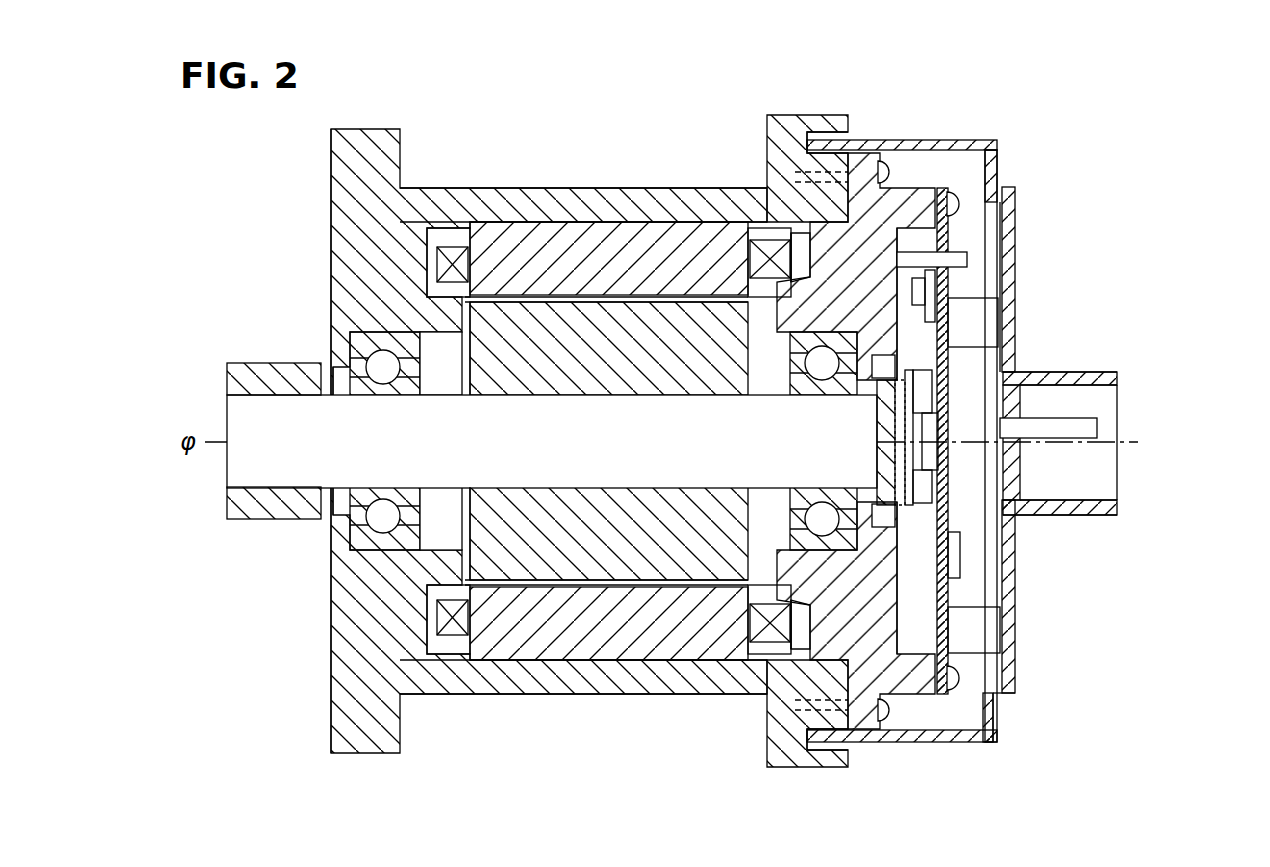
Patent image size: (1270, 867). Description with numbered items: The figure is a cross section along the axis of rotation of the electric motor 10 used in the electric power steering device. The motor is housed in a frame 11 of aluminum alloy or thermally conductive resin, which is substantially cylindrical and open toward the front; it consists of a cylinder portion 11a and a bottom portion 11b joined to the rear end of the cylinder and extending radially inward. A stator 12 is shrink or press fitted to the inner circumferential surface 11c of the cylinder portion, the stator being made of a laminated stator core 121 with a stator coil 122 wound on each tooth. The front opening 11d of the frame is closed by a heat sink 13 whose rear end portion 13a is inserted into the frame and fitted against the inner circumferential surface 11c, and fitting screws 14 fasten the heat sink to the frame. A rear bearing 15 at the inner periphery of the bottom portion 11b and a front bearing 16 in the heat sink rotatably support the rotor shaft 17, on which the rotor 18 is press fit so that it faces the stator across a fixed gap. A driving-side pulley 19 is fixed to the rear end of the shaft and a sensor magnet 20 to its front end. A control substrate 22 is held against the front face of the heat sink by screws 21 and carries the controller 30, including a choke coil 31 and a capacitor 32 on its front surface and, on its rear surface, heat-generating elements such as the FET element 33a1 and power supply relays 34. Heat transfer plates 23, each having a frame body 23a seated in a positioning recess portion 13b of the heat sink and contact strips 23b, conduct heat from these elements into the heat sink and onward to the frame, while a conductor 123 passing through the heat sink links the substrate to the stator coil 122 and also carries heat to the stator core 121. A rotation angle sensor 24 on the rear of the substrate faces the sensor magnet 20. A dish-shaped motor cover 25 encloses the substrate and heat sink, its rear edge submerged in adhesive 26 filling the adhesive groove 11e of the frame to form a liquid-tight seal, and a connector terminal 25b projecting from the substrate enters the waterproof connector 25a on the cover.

The electric motor 10 is at (632, 133).
The frame 11 is at (703, 197).
The cylinder portion 11a is at (605, 197).
The bottom portion 11b is at (333, 233).
The inner circumferential surface 11c is at (590, 665).
The opening 11d is at (795, 650).
The adhesive groove 11e is at (850, 700).
The stator 12 is at (668, 590).
The stator core 121 is at (530, 615).
The stator coil 122 is at (443, 633).
The conductor 123 is at (800, 250).
The heat sink 13 is at (870, 180).
The rear end portion 13a is at (800, 235).
The positioning recess portion 13b is at (950, 552).
The fitting screw 14 is at (892, 172).
The rear bearing 15 is at (373, 543).
The front bearing 16 is at (880, 700).
The rotor shaft 17 is at (227, 420).
The rotor 18 is at (470, 317).
The driving-side pulley 19 is at (240, 505).
The sensor magnet 20 is at (945, 480).
The screw 21 is at (993, 185).
The control substrate 22 is at (990, 700).
The heat transfer plate 23 is at (955, 215).
The frame body 23a is at (990, 630).
The contact strip 23b is at (950, 330).
The rotation angle sensor 24 is at (885, 470).
The motor cover 25 is at (1020, 263).
The waterproof connector 25a is at (1105, 505).
The connector terminal 25b is at (1088, 428).
The adhesive 26 is at (823, 140).
The controller 30 is at (1012, 227).
The choke coil 31 is at (985, 650).
The capacitor 32 is at (987, 310).
The FET element 33a1 is at (1105, 372).
The power supply relay 34 is at (983, 273).